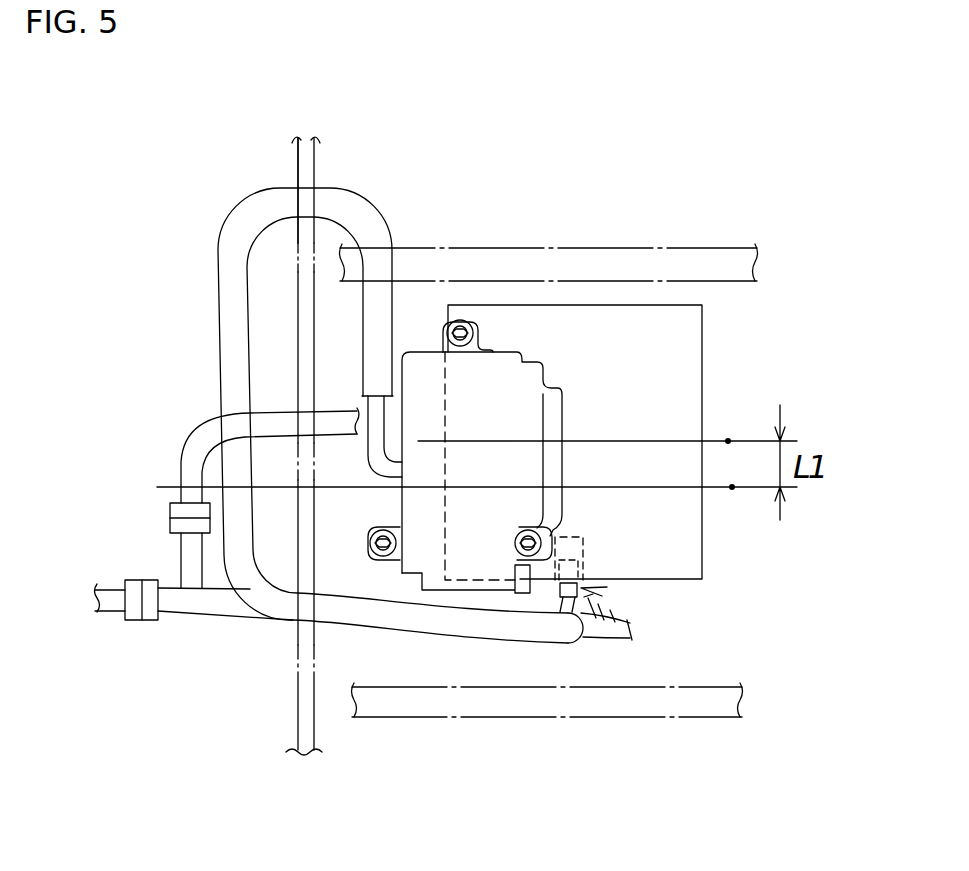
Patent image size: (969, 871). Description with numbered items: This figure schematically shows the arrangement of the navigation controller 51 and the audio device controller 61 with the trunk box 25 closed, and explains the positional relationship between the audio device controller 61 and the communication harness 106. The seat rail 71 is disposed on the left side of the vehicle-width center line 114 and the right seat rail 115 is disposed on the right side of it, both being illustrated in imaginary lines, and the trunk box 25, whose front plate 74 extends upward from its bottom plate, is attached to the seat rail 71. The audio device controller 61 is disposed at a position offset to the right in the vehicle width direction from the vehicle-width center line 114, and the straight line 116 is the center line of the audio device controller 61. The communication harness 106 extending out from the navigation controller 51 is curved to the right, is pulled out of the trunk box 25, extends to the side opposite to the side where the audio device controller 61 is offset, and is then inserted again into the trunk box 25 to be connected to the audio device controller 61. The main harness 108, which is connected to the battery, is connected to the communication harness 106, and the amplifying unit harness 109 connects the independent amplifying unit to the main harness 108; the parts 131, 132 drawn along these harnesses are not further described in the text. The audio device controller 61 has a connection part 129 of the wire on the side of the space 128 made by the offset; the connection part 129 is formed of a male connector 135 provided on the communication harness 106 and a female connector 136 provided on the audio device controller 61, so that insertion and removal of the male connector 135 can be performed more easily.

The trunk box 25 is at (292, 153).
The front plate 74 is at (300, 172).
The communication harness 106 is at (228, 327).
The amplifying unit harness 109 is at (192, 460).
The clamp 131 is at (170, 516).
The main harness 108 is at (110, 607).
The connector 132 is at (146, 620).
The right seat rail 115 is at (572, 253).
The seat rail 71 is at (512, 712).
The audio device controller 61 is at (632, 330).
The navigation controller 51 is at (498, 367).
The straight line 116 is at (728, 441).
The vehicle-width center line 114 is at (732, 487).
The male connector 135 is at (580, 562).
The female connector 136 is at (560, 597).
The space 128 is at (580, 562).
The connection part 129 is at (581, 588).